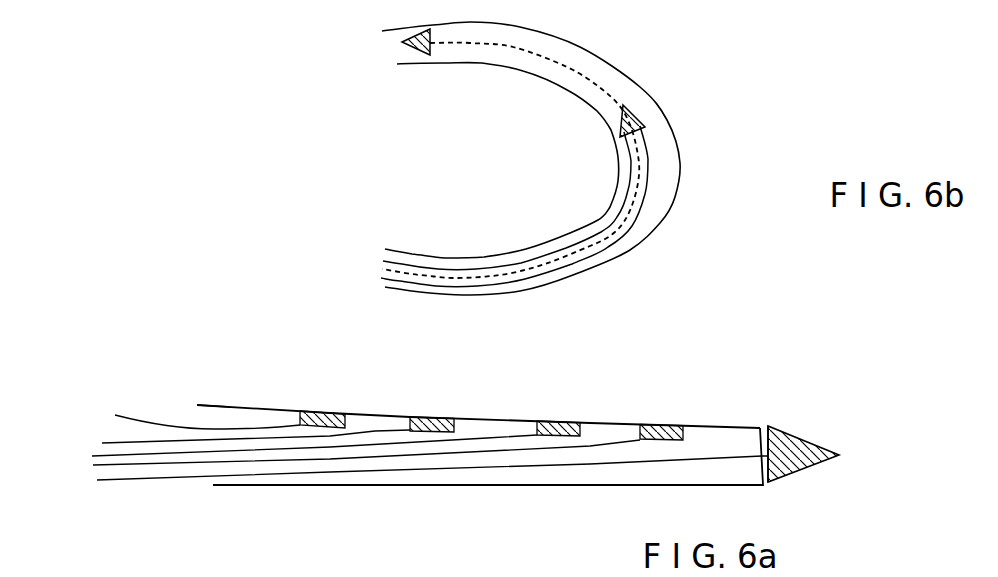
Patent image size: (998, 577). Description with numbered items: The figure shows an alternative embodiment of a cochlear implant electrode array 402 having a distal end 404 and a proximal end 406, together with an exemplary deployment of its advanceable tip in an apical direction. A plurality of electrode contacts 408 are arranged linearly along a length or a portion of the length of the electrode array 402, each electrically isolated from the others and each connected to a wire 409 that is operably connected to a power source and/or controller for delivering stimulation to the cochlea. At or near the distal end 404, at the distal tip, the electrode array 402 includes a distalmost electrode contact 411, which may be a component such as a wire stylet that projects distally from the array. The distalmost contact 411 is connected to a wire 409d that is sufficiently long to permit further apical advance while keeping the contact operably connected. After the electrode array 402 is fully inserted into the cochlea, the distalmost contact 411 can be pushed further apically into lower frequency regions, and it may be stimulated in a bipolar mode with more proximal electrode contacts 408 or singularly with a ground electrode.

In FIG. 6A, the electrode array 402 is at (720, 437).
In FIG. 6B, the distal end 404 is at (647, 137).
In FIG. 6A, the distal end 404 is at (798, 430).
In FIG. 6B, the proximal end 406 is at (560, 258).
In FIG. 6A, the proximal end 406 is at (223, 405).
In FIG. 6B, the electrode contacts 408 is at (647, 185).
In FIG. 6A, the electrode contacts 408 is at (318, 412).
In FIG. 6A, the wire 409 is at (132, 417).
In FIG. 6A, the wire 409d is at (570, 462).
In FIG. 6B, the distalmost electrode contact 411 is at (413, 49).
In FIG. 6A, the distalmost electrode contact 411 is at (828, 447).